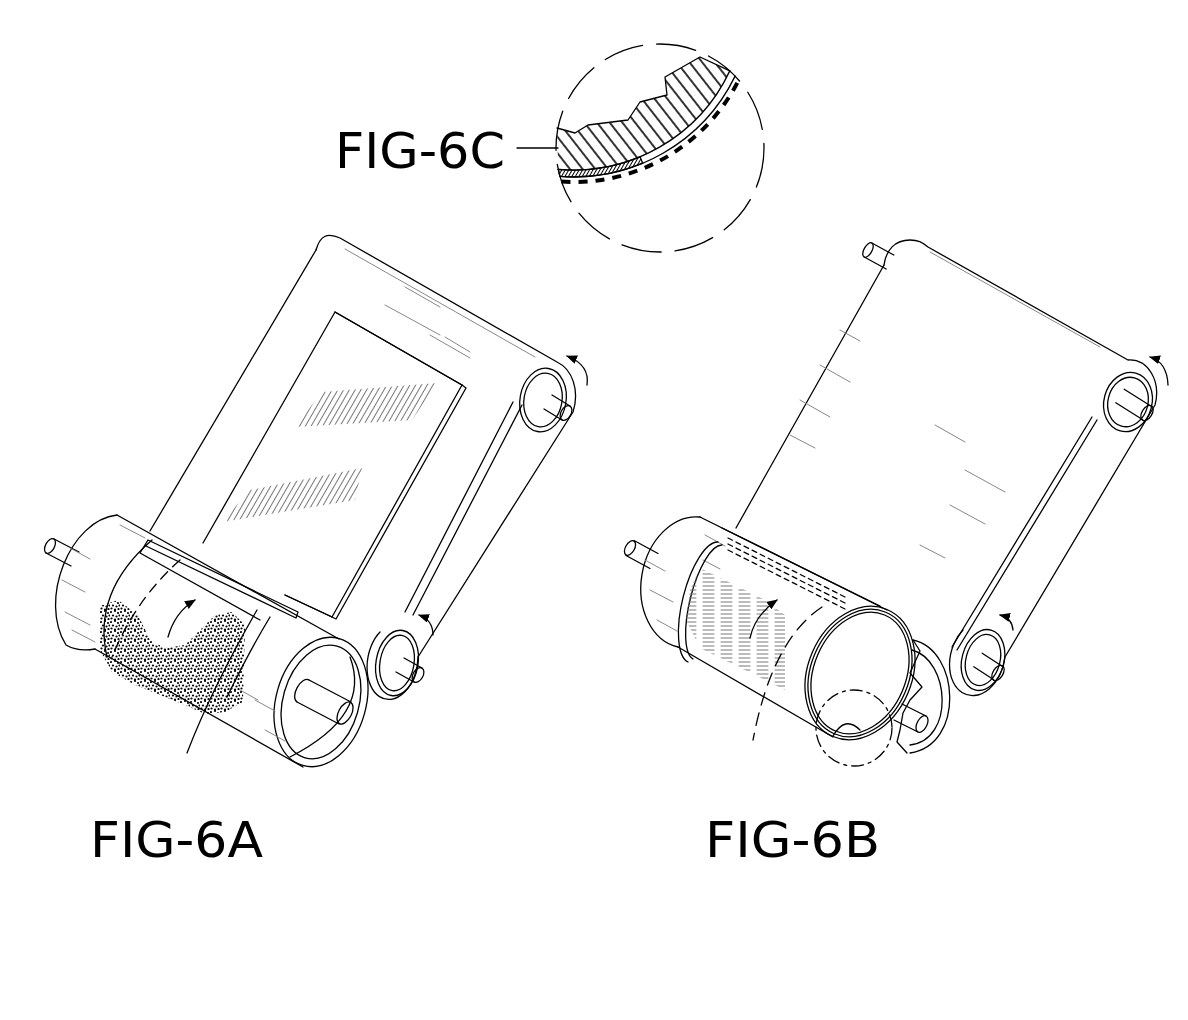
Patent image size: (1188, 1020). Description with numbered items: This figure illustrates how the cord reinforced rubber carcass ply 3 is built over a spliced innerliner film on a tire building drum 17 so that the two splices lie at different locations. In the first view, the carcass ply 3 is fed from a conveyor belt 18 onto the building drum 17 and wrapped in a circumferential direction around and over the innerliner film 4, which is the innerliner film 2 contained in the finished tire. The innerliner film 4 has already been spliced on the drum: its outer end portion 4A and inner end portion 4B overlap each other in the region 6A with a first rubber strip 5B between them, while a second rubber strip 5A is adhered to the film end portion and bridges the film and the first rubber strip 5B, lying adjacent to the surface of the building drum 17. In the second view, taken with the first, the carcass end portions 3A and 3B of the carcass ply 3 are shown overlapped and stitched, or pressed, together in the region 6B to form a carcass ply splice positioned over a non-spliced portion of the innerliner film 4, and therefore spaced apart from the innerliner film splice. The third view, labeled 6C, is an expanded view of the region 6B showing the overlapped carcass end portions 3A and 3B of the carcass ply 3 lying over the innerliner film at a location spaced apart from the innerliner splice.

In FIG. 6B, the innerliner film 2 is at (820, 575).
In FIG. 6C, the innerliner film 2 is at (717, 127).
In FIG. 6A, the carcass ply 3 is at (287, 397).
In FIG. 6B, the carcass ply 3 is at (728, 687).
In FIG. 6C, the carcass ply 3 is at (603, 180).
In FIG. 6A, the carcass end portion 3A is at (217, 548).
In FIG. 6B, the carcass end portion 3A is at (827, 733).
In FIG. 6C, the carcass end portion 3A is at (630, 163).
In FIG. 6A, the carcass end portion 3B is at (363, 330).
In FIG. 6B, the carcass end portion 3B is at (897, 745).
In FIG. 6C, the carcass end portion 3B is at (687, 147).
In FIG. 6A, the innerliner film 4 is at (183, 660).
In FIG. 6C, the innerliner film 4 is at (555, 178).
In FIG. 6A, the outer end portion 4A is at (112, 660).
In FIG. 6B, the outer end portion 4A is at (877, 627).
In FIG. 6A, the inner end portion 4B is at (235, 597).
In FIG. 6B, the inner end portion 4B is at (781, 687).
In FIG. 6A, the second rubber strip 5A is at (289, 630).
In FIG. 6B, the second rubber strip 5A is at (856, 618).
In FIG. 6A, the first rubber strip 5B is at (216, 692).
In FIG. 6B, the first rubber strip 5B is at (850, 620).
In FIG. 6A, the building drum 17 is at (313, 767).
In FIG. 6B, the building drum 17 is at (663, 647).
In FIG. 6C, the building drum 17 is at (662, 117).
In FIG. 6A, the conveyor belt 18 is at (460, 307).
In FIG. 6B, the conveyor belt 18 is at (1048, 308).
In FIG. 6B, the region 6A is at (712, 537).
In FIG. 6B, the region 6B is at (872, 745).
In FIG. 6C, the region 6B is at (657, 183).
In FIG. 6B, the detail region indicator FIG. 6C is at (897, 708).